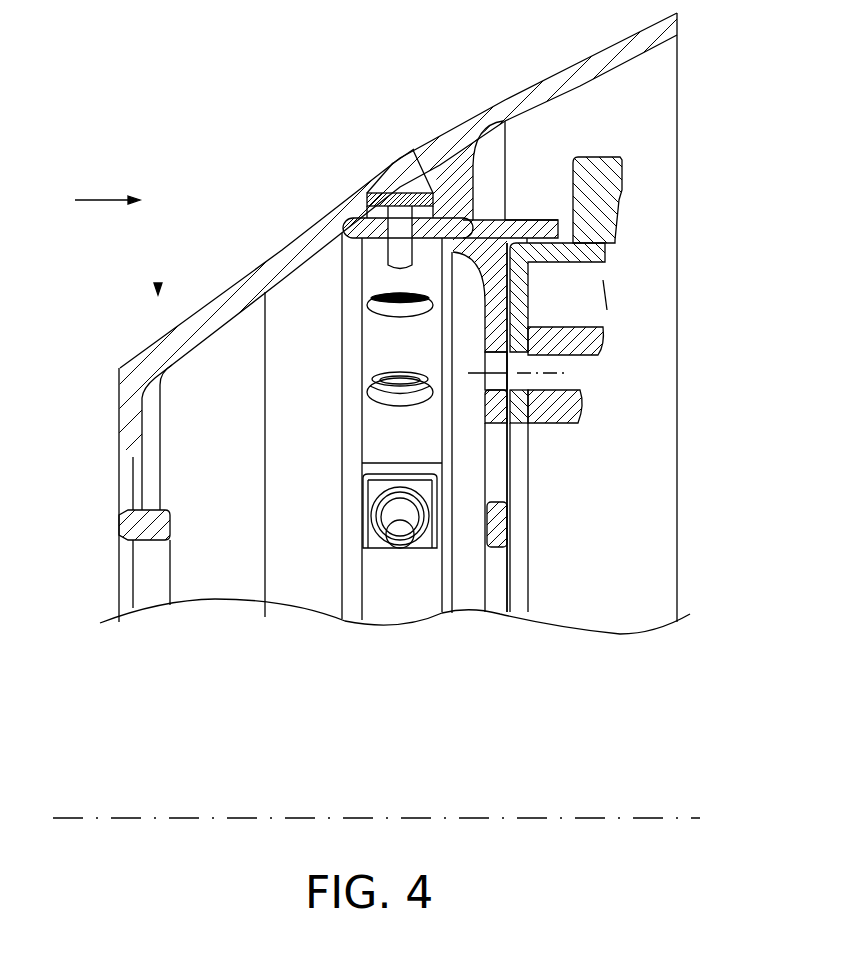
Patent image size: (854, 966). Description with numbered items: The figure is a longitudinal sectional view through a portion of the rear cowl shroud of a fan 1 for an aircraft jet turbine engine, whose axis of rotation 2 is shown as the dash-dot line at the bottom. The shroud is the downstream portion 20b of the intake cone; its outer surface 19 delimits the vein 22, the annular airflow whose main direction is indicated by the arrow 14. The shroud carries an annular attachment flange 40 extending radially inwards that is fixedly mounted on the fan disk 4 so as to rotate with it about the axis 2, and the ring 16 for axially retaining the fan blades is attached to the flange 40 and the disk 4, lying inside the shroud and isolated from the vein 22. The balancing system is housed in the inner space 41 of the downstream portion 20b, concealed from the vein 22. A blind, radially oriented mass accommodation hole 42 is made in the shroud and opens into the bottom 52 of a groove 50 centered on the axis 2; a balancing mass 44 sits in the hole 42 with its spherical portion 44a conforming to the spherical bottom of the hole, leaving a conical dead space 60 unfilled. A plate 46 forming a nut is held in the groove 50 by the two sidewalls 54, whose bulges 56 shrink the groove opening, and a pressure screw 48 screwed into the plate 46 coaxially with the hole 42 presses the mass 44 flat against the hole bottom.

The fan 1 is at (293, 99).
The axis of rotation 2 is at (62, 816).
The fan disk 4 is at (585, 324).
The arrow 14 is at (108, 195).
The ring 16 is at (594, 158).
The outer surface 19 is at (264, 262).
The downstream portion of the intake cone 20b is at (158, 292).
The vein 22 is at (264, 169).
The annular attachment flange 40 is at (442, 333).
The inner space 41 is at (232, 459).
The mass accommodation hole 42 is at (384, 186).
The balancing mass 44 is at (433, 176).
The spherical portion 44a is at (365, 197).
The plate 46 is at (373, 232).
The pressure screw 48 is at (413, 267).
The groove 50 is at (414, 449).
The bottom of the groove 52 is at (405, 352).
The sidewall 54 is at (346, 226).
The bulge 56 is at (367, 426).
The dead space 60 is at (392, 172).